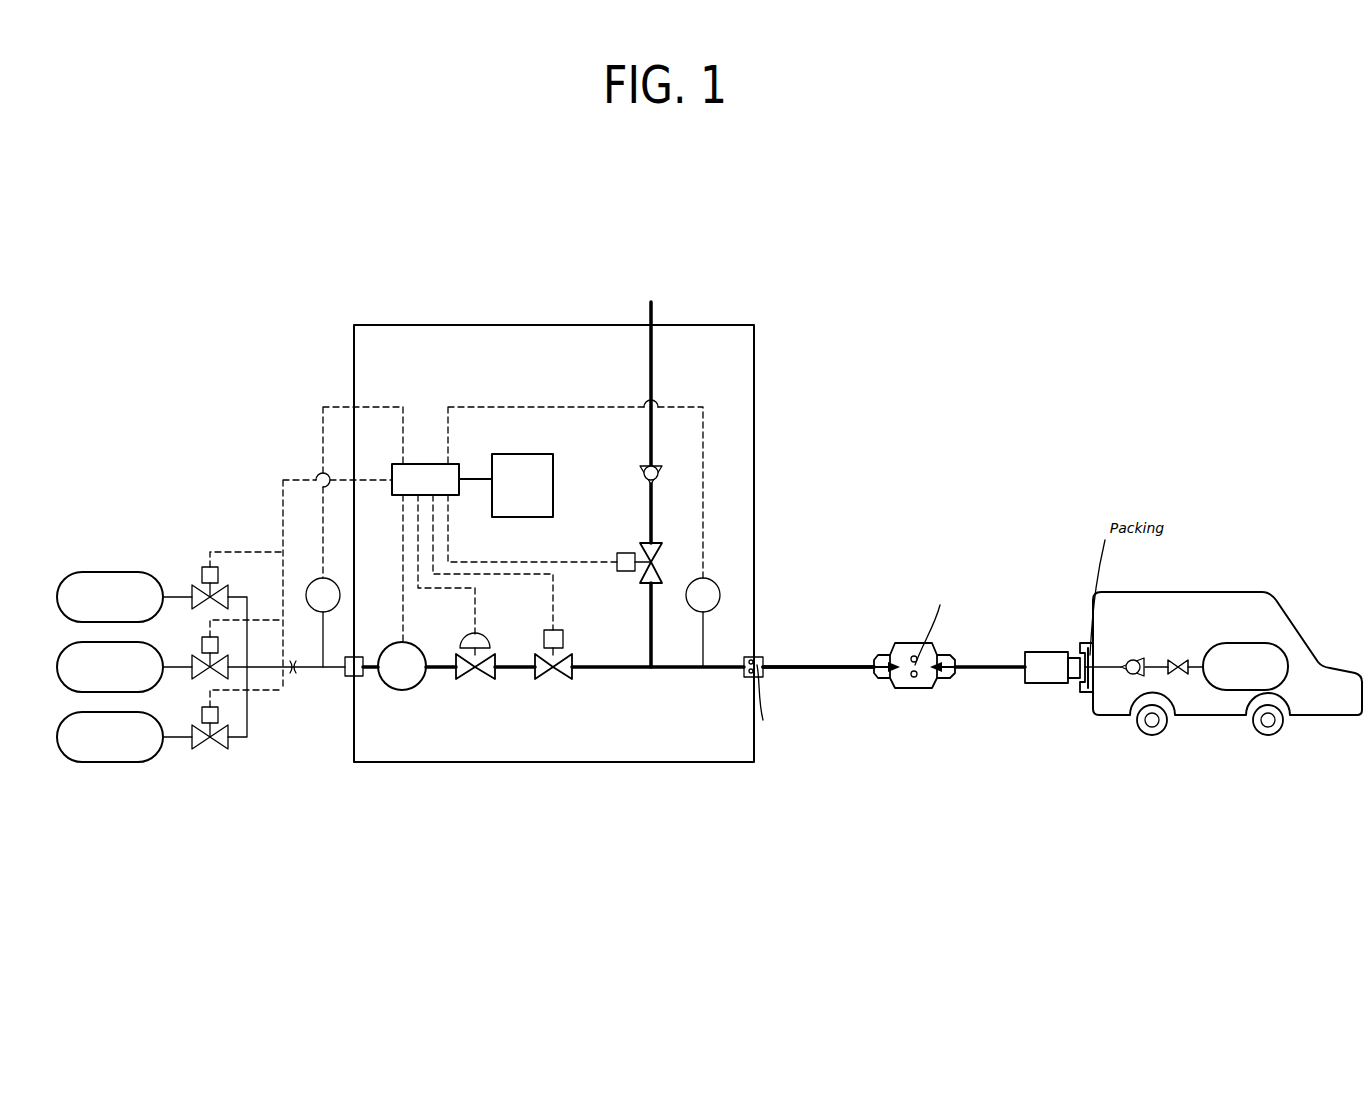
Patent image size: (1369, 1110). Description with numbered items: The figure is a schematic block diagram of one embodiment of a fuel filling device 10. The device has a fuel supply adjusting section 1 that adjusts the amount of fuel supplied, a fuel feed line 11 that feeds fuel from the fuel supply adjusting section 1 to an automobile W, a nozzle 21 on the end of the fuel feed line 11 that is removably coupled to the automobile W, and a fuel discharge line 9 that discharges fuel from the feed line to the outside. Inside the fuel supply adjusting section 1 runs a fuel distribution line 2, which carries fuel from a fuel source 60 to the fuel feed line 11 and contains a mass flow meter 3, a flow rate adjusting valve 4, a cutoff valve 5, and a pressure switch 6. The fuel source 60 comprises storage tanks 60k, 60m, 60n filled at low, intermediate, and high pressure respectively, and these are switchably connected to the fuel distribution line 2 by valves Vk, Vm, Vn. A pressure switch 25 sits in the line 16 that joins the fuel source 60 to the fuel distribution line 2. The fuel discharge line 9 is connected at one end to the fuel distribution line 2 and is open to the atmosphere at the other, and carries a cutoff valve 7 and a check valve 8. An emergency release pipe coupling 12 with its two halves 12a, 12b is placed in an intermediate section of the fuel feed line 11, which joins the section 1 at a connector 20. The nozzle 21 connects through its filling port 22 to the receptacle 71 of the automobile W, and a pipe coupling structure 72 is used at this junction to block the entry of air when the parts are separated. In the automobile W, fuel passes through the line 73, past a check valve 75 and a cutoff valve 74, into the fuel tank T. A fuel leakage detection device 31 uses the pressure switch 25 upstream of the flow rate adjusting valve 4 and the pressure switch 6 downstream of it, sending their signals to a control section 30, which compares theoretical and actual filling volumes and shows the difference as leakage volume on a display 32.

The fuel supply adjusting section 1 is at (470, 325).
The fuel distribution line 2 is at (608, 670).
The mass flow meter 3 is at (400, 690).
The flow rate adjusting valve 4 is at (470, 680).
The cutoff valve 5 is at (548, 680).
The pressure switch 6 is at (712, 578).
The cutoff valve 7 is at (645, 585).
The check valve 8 is at (660, 467).
The fuel discharge line 9 is at (655, 365).
The fuel filling device 10 is at (784, 317).
The fuel feed line 11 is at (855, 665).
The emergency release pipe coupling 12 is at (903, 690).
The coupling upstream part 12a is at (875, 680).
The coupling downstream part 12b is at (945, 682).
The line 16 is at (312, 670).
The hose connector 20 is at (765, 655).
The nozzle 21 is at (1028, 652).
The filling port 22 is at (1066, 684).
The pressure switch 25 is at (318, 578).
The control section 30 is at (421, 463).
The fuel leakage detection device 31 is at (463, 450).
The display 32 is at (553, 470).
The fuel source 60 is at (247, 790).
The storage tank 60k is at (110, 597).
The storage tank 60m is at (110, 667).
The storage tank 60n is at (110, 737).
The valve Vk is at (188, 580).
The valve Vm is at (192, 658).
The valve Vn is at (202, 749).
The receptacle 71 is at (1086, 650).
The pipe coupling structure 72 is at (1088, 700).
The line 73 is at (1105, 665).
The cutoff valve 74 is at (1185, 675).
The check valve 75 is at (1130, 680).
The fuel tank T is at (1235, 643).
The automobile W is at (1270, 592).